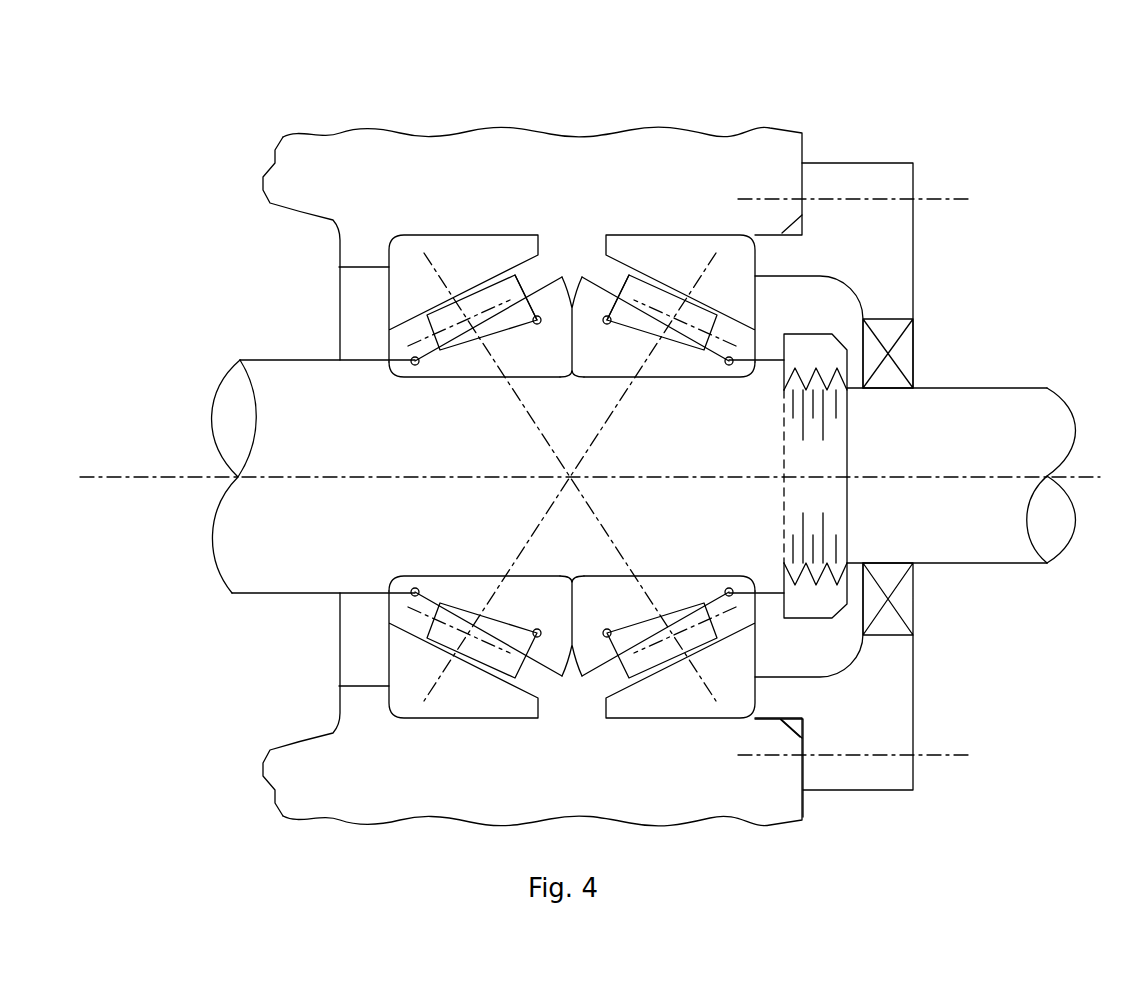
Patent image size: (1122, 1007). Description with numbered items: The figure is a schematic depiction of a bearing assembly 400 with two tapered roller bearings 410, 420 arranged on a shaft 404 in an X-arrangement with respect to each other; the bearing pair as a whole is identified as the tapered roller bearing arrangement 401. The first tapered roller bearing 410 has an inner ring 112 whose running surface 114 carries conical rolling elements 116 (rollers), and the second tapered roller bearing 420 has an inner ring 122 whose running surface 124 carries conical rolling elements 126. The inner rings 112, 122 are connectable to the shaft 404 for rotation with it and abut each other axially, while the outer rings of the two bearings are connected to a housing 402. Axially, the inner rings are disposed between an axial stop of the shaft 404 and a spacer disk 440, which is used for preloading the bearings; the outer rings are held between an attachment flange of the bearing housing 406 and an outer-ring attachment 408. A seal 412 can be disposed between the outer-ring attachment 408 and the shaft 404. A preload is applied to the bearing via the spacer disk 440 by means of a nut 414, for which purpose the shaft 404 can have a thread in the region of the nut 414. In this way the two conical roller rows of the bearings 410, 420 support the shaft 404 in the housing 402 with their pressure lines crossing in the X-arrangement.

The bearing assembly 400 is at (553, 80).
The double row tapered roller bearing 401 is at (570, 250).
The housing 402 is at (750, 150).
The shaft 404 is at (232, 586).
The attachment flange of the bearing 406 is at (382, 246).
The outer-ring attachment 408 is at (911, 247).
The tapered roller bearing 410 is at (408, 250).
The seal 412 is at (911, 357).
The nut 414 is at (825, 603).
The tapered roller bearing 420 is at (697, 248).
The spacer disk 440 is at (767, 587).
The inner ring 112 is at (528, 362).
The running surface 114 is at (468, 343).
The rolling elements 116 is at (476, 300).
The inner ring 122 is at (612, 362).
The running surface 124 is at (676, 343).
The rolling elements 126 is at (638, 293).